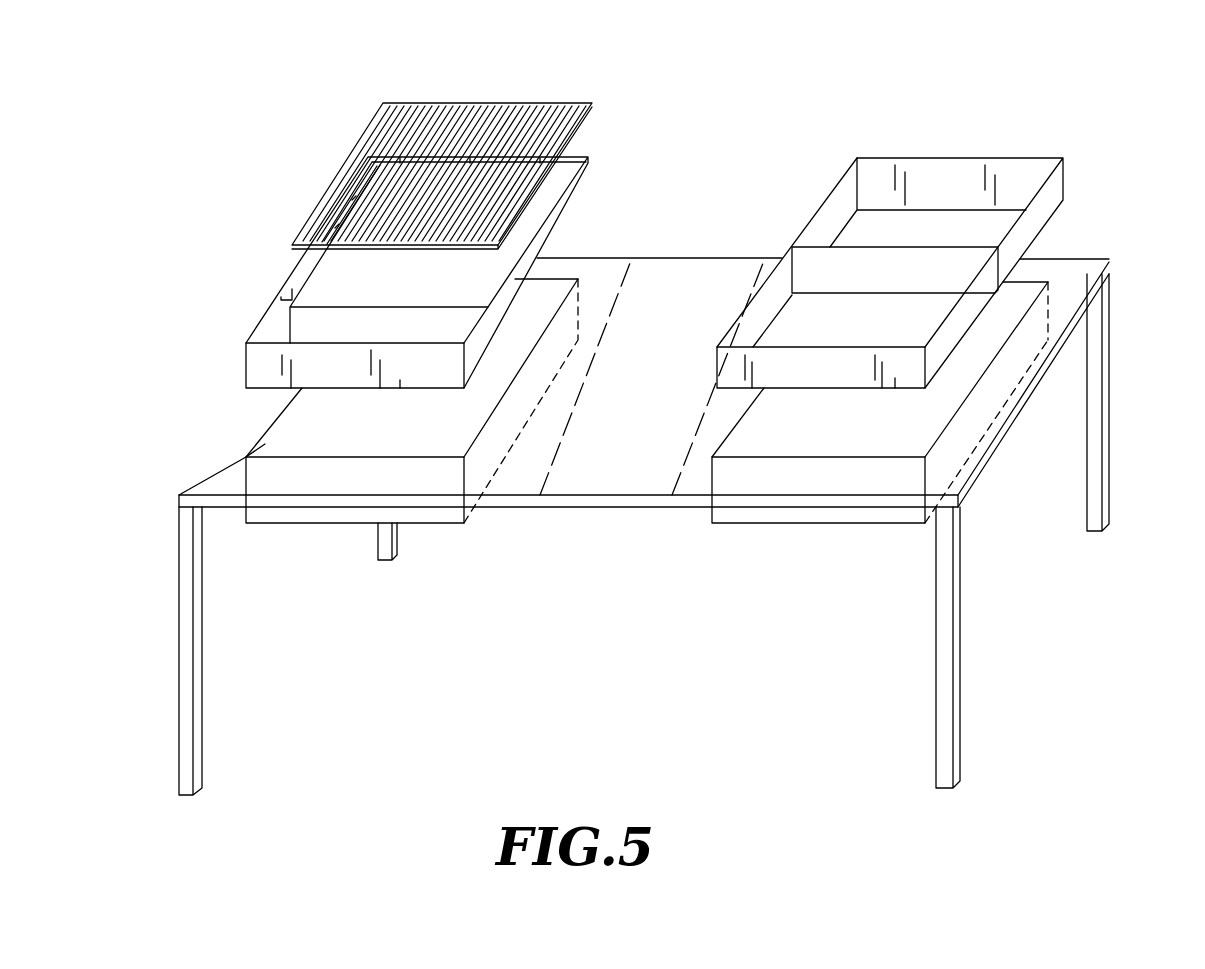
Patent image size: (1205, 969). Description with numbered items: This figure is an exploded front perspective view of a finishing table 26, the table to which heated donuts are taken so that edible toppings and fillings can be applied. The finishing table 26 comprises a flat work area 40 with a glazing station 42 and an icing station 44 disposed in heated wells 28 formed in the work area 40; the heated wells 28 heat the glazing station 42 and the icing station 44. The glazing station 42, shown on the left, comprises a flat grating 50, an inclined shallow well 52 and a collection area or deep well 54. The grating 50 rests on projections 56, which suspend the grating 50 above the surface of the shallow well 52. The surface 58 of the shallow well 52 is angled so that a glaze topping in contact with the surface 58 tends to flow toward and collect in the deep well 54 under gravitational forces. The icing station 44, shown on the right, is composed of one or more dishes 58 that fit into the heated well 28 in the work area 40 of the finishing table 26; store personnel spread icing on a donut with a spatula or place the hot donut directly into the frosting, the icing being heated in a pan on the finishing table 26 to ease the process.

The finishing table 26 is at (888, 102).
The heated wells 28 is at (282, 440).
The flat work area 40 is at (607, 478).
The glazing station 42 is at (283, 267).
The icing station 44 is at (1063, 243).
The flat grating 50 is at (481, 101).
The inclined shallow well 52 is at (530, 227).
The deep well 54 is at (300, 340).
The projections 56 is at (362, 170).
The dishes 58 is at (391, 272).